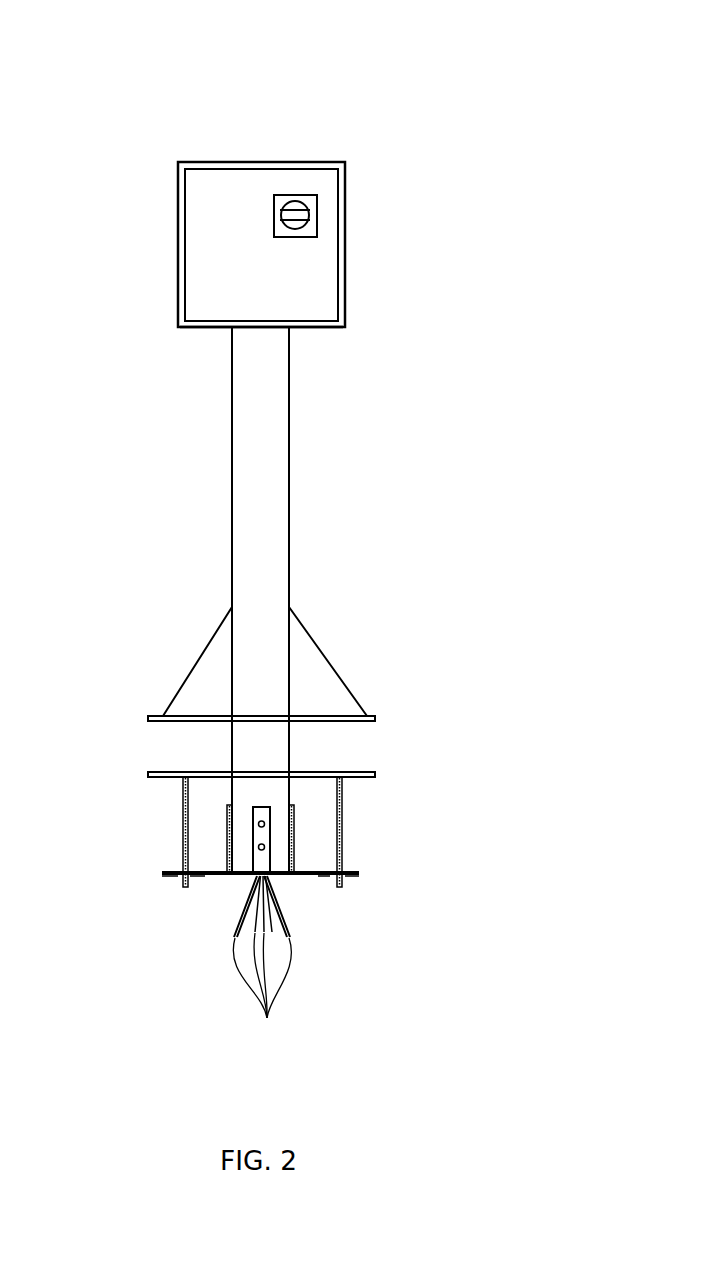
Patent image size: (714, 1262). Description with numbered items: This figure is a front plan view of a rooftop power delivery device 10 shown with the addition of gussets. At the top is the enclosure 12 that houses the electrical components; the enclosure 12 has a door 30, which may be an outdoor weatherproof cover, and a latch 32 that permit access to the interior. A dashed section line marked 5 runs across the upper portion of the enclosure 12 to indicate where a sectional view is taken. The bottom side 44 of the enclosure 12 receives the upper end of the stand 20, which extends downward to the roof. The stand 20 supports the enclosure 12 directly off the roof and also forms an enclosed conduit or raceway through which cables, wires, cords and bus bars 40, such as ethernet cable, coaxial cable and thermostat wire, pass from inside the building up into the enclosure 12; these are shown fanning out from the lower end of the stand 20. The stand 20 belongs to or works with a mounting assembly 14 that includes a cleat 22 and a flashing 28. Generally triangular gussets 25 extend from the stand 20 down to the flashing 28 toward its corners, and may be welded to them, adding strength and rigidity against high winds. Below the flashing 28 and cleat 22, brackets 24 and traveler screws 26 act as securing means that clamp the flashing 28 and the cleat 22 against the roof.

The rooftop power delivery device 10 is at (186, 60).
The section line 5- 5 is at (373, 181).
The enclosure 12 is at (178, 263).
The door 30 is at (330, 308).
The latch 32 is at (317, 237).
The bottom side 44 is at (200, 328).
The stand 20 is at (290, 510).
The gussets 25 is at (201, 655).
The flashing 28 is at (338, 714).
The cleat 22 is at (157, 772).
The mounting assembly 14 is at (257, 918).
The traveler screws 26 is at (183, 850).
The brackets 24 is at (205, 877).
The cables, wires, cords and bus bars 40 is at (262, 967).